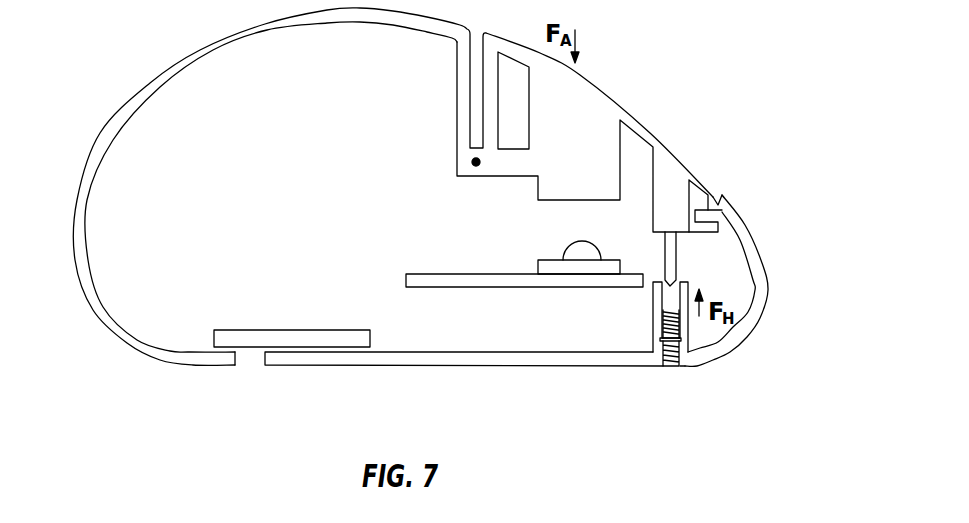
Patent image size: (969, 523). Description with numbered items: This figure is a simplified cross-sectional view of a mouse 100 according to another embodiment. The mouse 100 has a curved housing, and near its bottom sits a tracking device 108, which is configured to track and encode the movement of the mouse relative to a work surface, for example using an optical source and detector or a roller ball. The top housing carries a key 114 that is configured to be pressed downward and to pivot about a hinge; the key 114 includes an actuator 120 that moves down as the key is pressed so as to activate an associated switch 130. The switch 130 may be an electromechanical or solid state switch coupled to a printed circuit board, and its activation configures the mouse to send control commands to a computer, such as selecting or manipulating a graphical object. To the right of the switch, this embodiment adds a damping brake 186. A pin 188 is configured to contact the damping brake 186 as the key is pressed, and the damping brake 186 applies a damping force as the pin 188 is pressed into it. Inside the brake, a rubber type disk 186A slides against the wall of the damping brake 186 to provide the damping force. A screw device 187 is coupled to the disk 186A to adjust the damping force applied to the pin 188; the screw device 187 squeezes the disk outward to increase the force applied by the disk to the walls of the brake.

The mouse 100 is at (88, 50).
The key 114 is at (615, 100).
The actuator 120 is at (545, 201).
The switch 130 is at (577, 243).
The tracking device 108 is at (290, 329).
The damping brake 186 is at (648, 322).
The rubber type disk 186A is at (687, 360).
The screw device 187 is at (670, 368).
The pin 188 is at (688, 255).